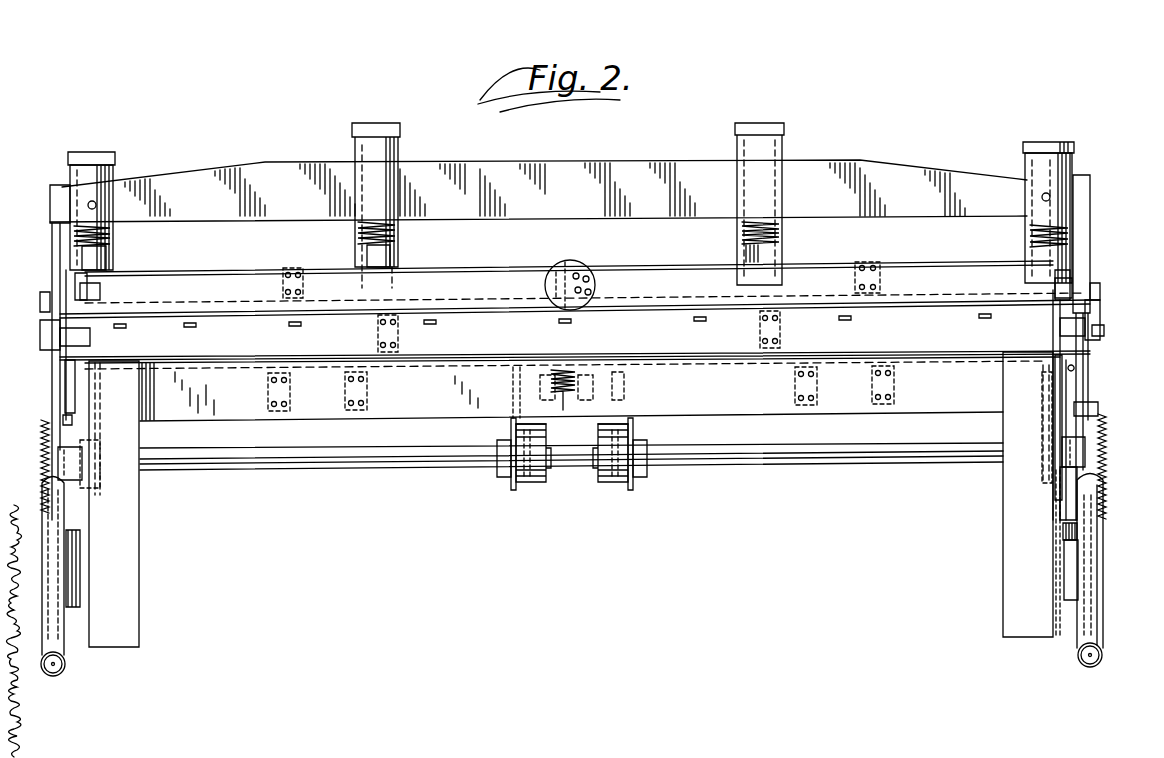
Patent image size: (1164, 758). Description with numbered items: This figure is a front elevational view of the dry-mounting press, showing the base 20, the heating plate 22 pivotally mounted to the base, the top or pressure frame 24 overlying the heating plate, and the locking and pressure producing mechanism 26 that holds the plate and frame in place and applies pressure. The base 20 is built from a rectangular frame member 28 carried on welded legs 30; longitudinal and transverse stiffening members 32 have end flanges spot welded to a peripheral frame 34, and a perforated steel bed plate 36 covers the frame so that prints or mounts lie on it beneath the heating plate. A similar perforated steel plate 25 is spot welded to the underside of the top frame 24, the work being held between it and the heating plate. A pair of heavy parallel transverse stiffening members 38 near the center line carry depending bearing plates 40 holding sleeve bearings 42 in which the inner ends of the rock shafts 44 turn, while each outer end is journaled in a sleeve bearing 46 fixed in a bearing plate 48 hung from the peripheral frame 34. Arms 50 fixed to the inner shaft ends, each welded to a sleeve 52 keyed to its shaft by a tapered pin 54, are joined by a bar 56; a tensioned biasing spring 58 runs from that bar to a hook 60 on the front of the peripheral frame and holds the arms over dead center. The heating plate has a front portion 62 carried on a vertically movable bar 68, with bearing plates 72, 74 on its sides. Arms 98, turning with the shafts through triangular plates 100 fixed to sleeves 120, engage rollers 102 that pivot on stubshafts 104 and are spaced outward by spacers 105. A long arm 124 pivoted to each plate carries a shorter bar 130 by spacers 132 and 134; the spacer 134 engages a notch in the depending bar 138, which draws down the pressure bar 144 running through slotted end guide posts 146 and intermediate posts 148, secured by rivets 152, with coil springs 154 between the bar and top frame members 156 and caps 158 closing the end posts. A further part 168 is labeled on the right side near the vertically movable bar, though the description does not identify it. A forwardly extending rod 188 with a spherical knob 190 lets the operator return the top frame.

The base 20 is at (150, 552).
The heating plate 22 is at (942, 326).
The top frame 24 is at (880, 255).
The perforated steel plate 25 is at (692, 306).
The locking and pressure producing mechanism 26 is at (40, 272).
The rectangular frame member 28 is at (323, 408).
The legs 30 is at (115, 601).
The stiffening members 32 is at (266, 391).
The peripheral frame 34 is at (963, 400).
The bed plate 36 is at (926, 366).
The transverse stiffening members 38 is at (515, 382).
The bearing plates 40 is at (513, 437).
The sleeve bearings 42 is at (500, 479).
The rock shafts 44 is at (326, 462).
The sleeve bearing 46 is at (96, 487).
The bearing plate 48 is at (1027, 506).
The arms 50 is at (512, 436).
The sleeve 52 is at (540, 484).
The tapered pin 54 is at (522, 490).
The rod or bar 56 is at (620, 393).
The tensioned biasing spring 58 is at (547, 378).
The hook 60 is at (584, 360).
The front portion 62 is at (815, 324).
The vertically movable bar 68 is at (1080, 534).
The bearing plates 72 is at (97, 290).
The bearing plates 74 is at (75, 282).
The arms 98 is at (68, 657).
The triangularly shaped plates 100 is at (80, 560).
The rollers 102 is at (60, 328).
The stubshaft 104 is at (1104, 333).
The spacers 105 is at (105, 340).
The sleeve 120 is at (75, 443).
The long bar or arm 124 is at (46, 385).
The shorter parallel arm or bar 130 is at (75, 388).
The spacer 132 is at (68, 418).
The spacer 134 is at (40, 302).
The depending bar 138 is at (57, 185).
The pressure bar 144 is at (601, 160).
The end guide posts 146 is at (113, 178).
The intermediate guide posts 148 is at (355, 135).
The rivets 152 is at (1027, 199).
The coil springs 154 is at (742, 233).
The top frame members 156 is at (113, 256).
The caps 158 is at (92, 152).
The sleeve 168 is at (1078, 572).
The forwardly extending rod 188 is at (583, 272).
The spherical knob 190 is at (548, 283).